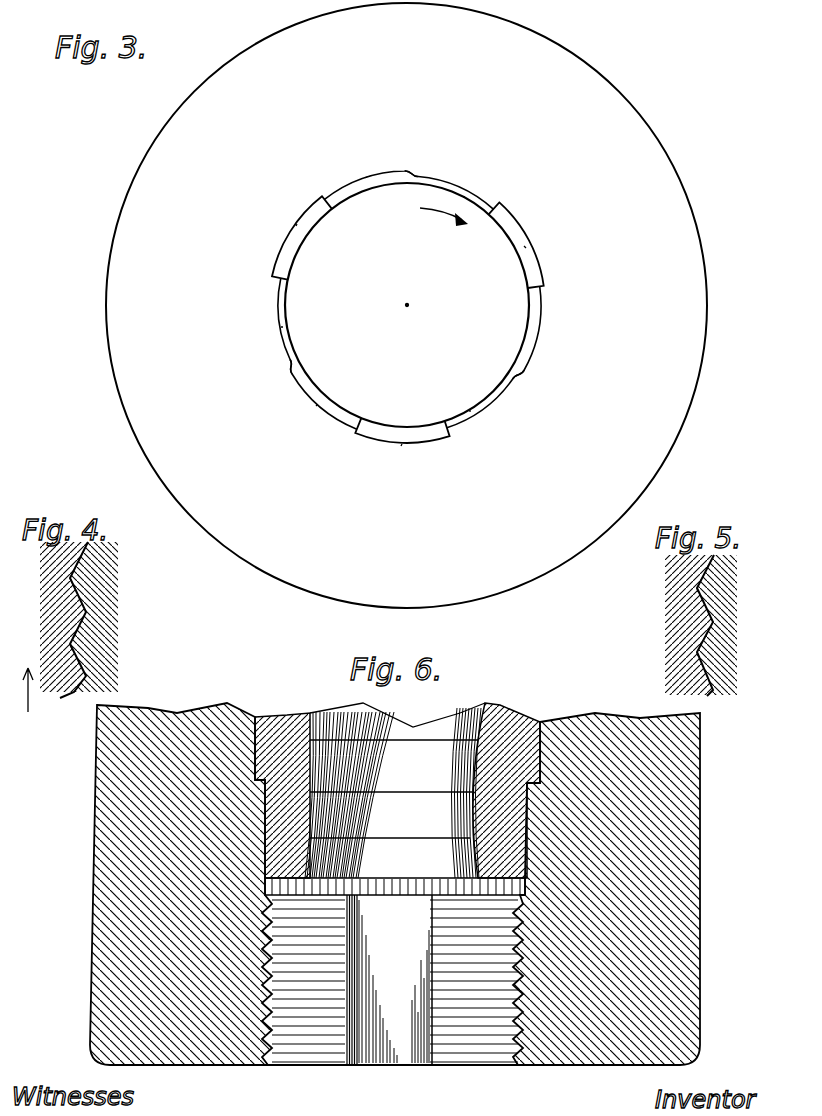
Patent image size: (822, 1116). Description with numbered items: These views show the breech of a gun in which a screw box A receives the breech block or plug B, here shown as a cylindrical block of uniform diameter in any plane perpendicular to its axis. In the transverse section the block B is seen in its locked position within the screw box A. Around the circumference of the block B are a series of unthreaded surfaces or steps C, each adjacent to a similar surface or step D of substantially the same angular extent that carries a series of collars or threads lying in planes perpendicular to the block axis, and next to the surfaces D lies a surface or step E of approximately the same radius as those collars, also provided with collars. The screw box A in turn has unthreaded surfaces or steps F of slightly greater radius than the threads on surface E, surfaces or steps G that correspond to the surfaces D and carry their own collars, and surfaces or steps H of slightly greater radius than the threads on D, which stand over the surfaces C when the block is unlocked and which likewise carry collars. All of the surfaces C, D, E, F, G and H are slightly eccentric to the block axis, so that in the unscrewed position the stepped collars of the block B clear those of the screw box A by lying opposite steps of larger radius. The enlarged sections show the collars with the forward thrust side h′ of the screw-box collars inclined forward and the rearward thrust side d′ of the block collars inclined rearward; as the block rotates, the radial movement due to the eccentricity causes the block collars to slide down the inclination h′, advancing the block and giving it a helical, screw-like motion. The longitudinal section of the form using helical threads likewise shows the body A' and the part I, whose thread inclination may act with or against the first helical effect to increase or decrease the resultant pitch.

In FIG. 3, the screw box A is at (406, 305).
In FIG. 4, the screw box A is at (112, 617).
In FIG. 5, the screw box A is at (740, 625).
In FIG. 3, the breech block B is at (407, 305).
In FIG. 4, the breech block B is at (58, 564).
In FIG. 5, the breech block B is at (680, 604).
In FIG. 3, the unthreaded surfaces or steps C is at (520, 230).
In FIG. 3, the surface or step D is at (438, 183).
In FIG. 3, the surface or step E is at (380, 181).
In FIG. 3, the surfaces or steps F is at (523, 238).
In FIG. 3, the surfaces or steps G is at (371, 183).
In FIG. 3, the surfaces or steps H is at (463, 197).
In FIG. 4, the forward or thrust side of collars h′ is at (85, 560).
In FIG. 5, the forward or thrust side of collars h′ is at (713, 570).
In FIG. 4, the rearward or thrust side of collars d′ is at (72, 617).
In FIG. 5, the rearward or thrust side of collars d′ is at (705, 573).
In FIG. 6, the body A' is at (418, 884).
In FIG. 6, the bolt I is at (344, 1067).